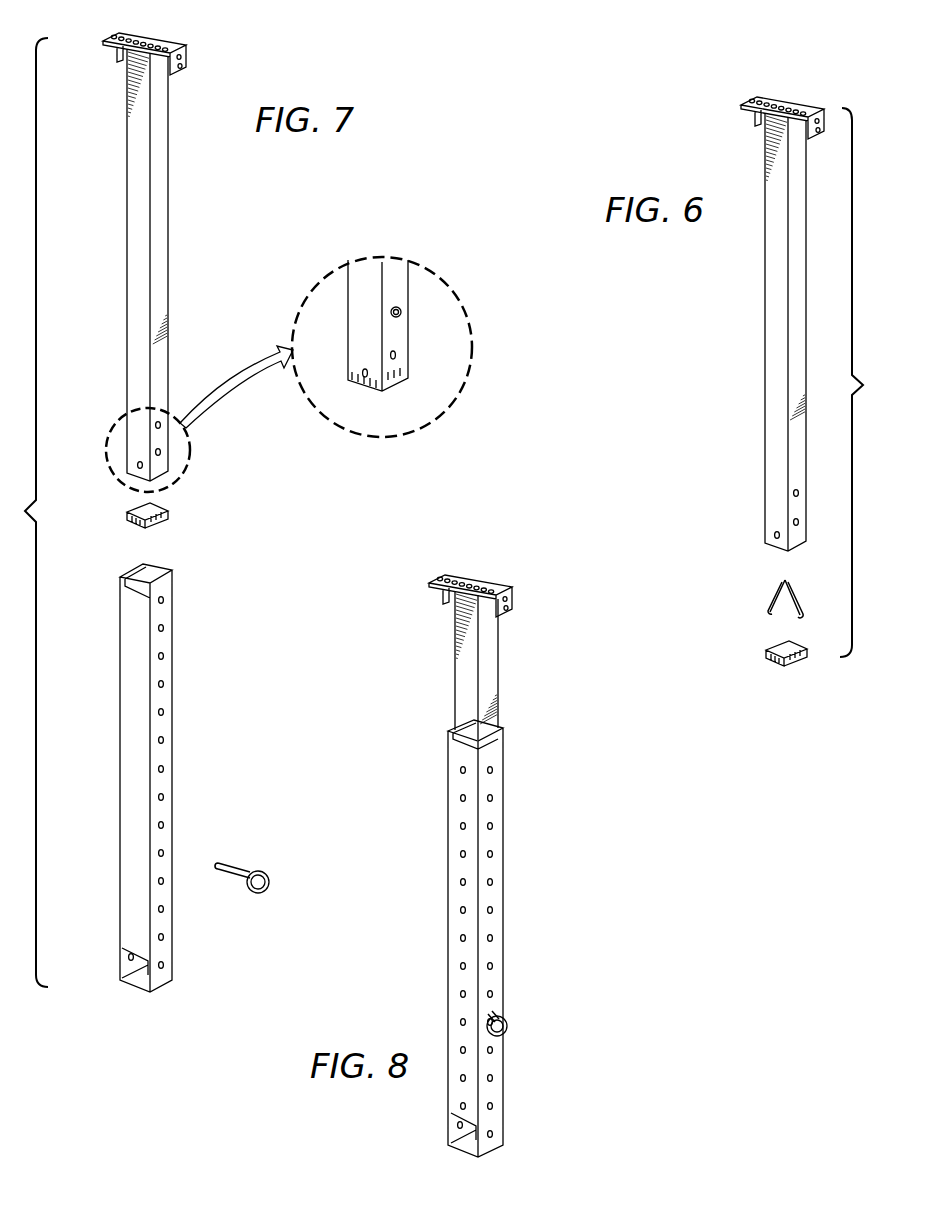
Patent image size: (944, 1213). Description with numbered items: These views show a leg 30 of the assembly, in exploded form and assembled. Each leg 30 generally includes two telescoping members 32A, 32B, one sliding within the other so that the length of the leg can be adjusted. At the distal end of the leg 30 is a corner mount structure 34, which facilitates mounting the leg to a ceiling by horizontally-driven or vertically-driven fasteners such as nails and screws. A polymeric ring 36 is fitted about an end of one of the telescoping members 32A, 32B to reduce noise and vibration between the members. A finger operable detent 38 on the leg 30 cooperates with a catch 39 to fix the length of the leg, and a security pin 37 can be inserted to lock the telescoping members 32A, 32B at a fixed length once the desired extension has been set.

In FIG. 8, the leg 30 is at (536, 681).
In FIG. 7, the telescoping member 32A is at (132, 204).
In FIG. 6, the telescoping member 32A is at (765, 285).
In FIG. 7, the telescoping member 32B is at (167, 638).
In FIG. 8, the corner mount structure 34 is at (429, 583).
In FIG. 7, the polymeric ring 36 is at (126, 514).
In FIG. 6, the polymeric ring 36 is at (766, 654).
In FIG. 7, the security pin 37 is at (230, 866).
In FIG. 8, the security pin 37 is at (505, 1018).
In FIG. 7, the finger operable detent 38 is at (401, 311).
In FIG. 6, the finger operable detent 38 is at (775, 601).
In FIG. 8, the catch 39 is at (492, 826).